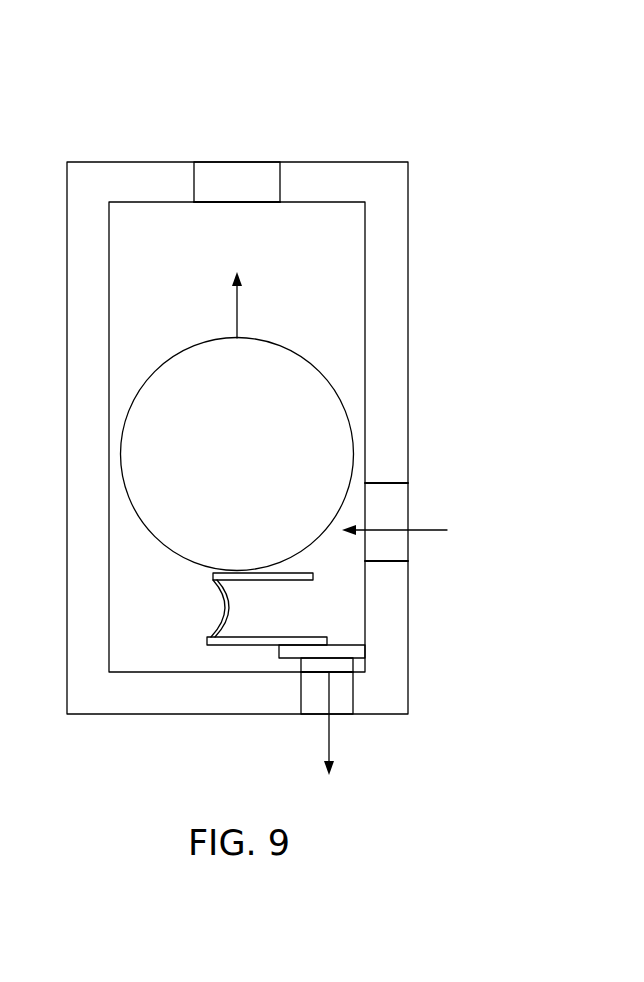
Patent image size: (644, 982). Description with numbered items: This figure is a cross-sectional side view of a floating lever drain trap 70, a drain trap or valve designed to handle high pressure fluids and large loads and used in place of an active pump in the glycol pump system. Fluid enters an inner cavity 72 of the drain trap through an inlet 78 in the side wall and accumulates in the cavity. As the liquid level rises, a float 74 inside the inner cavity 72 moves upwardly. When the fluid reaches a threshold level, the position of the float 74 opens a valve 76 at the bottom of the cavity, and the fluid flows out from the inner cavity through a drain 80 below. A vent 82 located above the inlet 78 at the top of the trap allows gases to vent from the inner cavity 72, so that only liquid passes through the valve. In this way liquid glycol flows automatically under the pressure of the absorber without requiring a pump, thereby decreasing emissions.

The drain trap 70 is at (493, 131).
The inner cavity 72 is at (315, 268).
The float 74 is at (343, 410).
The valve 76 is at (315, 637).
The inlet 78 is at (408, 518).
The drain 80 is at (340, 714).
The vent 82 is at (263, 162).